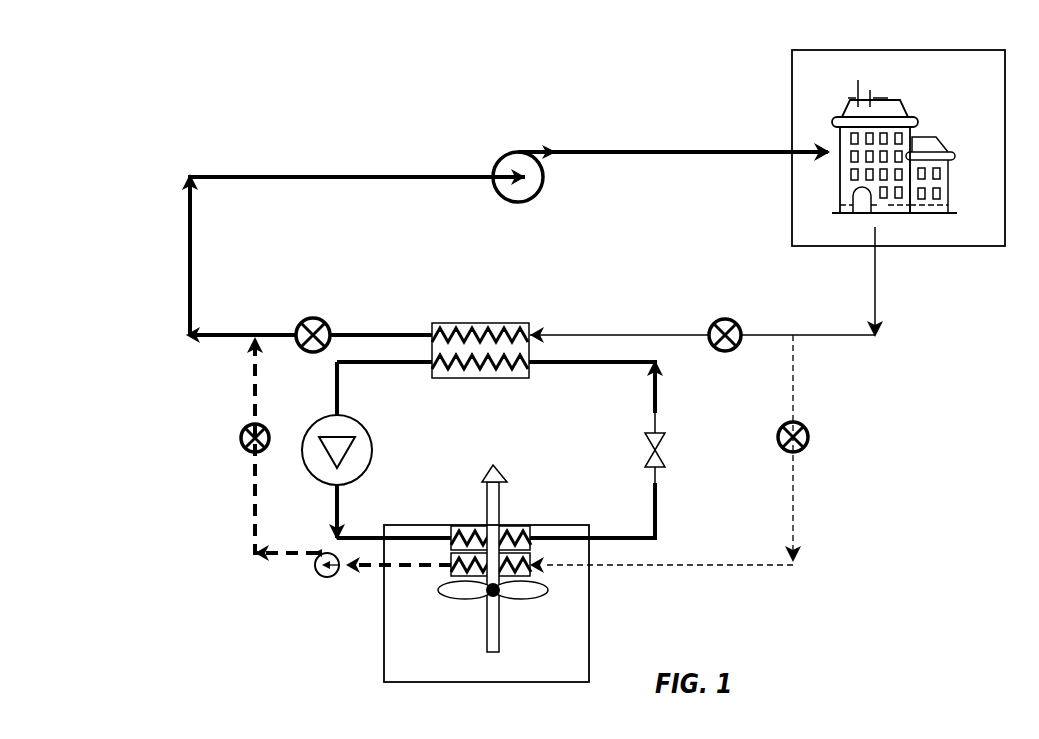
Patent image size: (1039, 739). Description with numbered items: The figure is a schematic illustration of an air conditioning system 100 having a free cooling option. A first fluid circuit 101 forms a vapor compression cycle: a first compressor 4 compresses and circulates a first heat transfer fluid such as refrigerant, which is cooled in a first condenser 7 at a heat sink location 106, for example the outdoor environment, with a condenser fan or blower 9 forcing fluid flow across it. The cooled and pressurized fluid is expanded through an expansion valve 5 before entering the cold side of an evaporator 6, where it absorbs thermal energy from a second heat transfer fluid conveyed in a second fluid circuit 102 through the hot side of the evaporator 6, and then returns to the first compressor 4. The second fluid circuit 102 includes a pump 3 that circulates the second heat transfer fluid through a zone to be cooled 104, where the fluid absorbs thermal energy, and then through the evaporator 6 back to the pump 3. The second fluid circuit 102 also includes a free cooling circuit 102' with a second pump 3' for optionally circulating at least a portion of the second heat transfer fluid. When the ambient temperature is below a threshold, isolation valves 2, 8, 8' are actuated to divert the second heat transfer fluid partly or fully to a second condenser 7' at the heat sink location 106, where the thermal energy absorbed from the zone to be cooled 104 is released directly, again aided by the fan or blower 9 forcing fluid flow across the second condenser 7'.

The air conditioning system 100 is at (165, 158).
The pump 3 is at (529, 158).
The second fluid circuit 102 is at (674, 131).
The zone to be cooled 104 is at (973, 116).
The valve 2 is at (727, 318).
The valve 8 is at (290, 318).
The evaporator 6 is at (445, 322).
The first compressor 4 is at (310, 430).
The expansion valve 5 is at (666, 450).
The first fluid circuit 101 is at (660, 522).
The first condenser 7 is at (479, 516).
The second condenser 7' is at (467, 591).
The condenser fan or blower 9 is at (456, 598).
The heat sink location 106 is at (574, 656).
The second pump 3' is at (316, 592).
The valve 8' is at (815, 424).
The free cooling circuit 102' is at (561, 454).